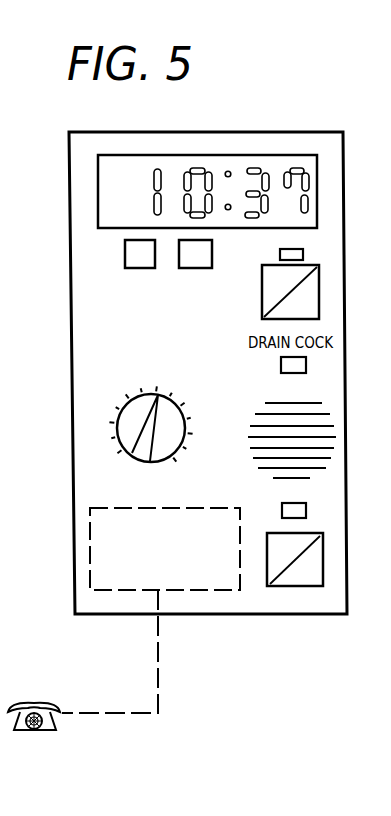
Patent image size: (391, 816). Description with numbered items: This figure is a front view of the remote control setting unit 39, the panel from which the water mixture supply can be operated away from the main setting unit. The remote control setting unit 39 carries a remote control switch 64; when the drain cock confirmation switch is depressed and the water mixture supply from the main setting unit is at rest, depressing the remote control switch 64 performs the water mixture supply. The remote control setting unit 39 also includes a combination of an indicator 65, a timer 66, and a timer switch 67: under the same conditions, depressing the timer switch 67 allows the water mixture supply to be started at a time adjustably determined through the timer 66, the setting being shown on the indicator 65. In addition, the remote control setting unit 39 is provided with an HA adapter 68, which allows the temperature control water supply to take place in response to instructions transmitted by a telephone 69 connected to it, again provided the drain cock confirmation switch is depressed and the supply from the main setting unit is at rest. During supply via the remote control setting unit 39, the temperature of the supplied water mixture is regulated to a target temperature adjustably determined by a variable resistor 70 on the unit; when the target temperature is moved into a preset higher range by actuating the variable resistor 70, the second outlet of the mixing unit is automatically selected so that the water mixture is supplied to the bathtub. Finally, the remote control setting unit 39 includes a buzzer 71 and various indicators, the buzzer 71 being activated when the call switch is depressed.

The remote control setting unit 39 is at (262, 112).
The remote control switch 64 is at (323, 565).
The indicator 65 is at (98, 212).
The timer 66 is at (124, 286).
The timer switch 67 is at (320, 292).
The HA adapter 68 is at (200, 586).
The telephone 69 is at (38, 701).
The variable resistor 70 is at (130, 412).
The buzzer 71 is at (320, 442).